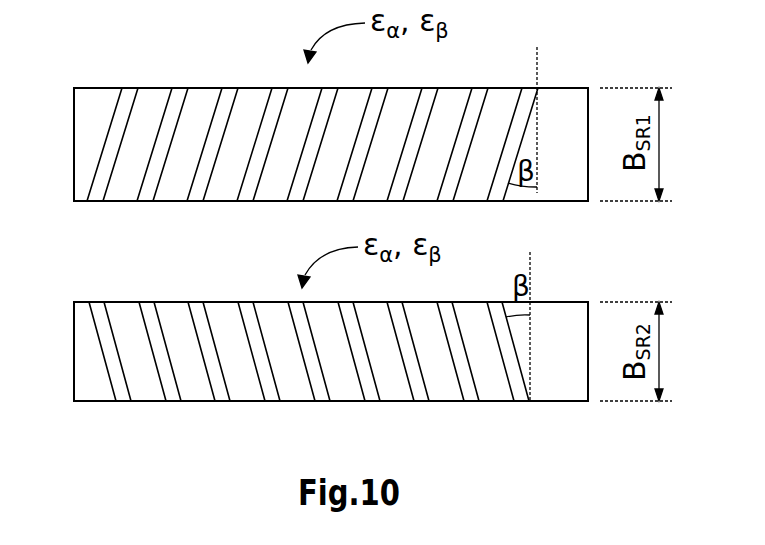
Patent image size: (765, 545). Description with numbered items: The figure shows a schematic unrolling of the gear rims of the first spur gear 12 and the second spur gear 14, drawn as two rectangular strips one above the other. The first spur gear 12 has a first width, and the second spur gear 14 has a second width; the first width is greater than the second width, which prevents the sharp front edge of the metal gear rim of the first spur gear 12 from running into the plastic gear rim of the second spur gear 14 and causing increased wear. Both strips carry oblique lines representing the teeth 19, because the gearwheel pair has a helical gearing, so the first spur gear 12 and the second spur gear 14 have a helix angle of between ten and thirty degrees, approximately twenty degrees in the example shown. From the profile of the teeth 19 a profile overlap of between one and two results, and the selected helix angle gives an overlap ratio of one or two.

The first spur gear 12 is at (103, 88).
The second spur gear 14 is at (104, 345).
The teeth 19 is at (232, 98).